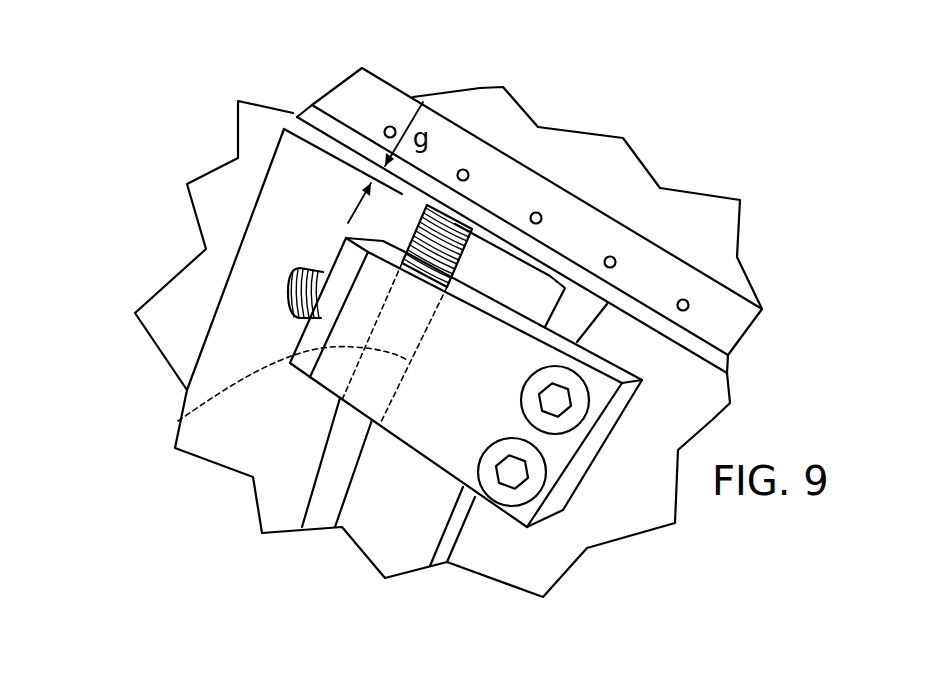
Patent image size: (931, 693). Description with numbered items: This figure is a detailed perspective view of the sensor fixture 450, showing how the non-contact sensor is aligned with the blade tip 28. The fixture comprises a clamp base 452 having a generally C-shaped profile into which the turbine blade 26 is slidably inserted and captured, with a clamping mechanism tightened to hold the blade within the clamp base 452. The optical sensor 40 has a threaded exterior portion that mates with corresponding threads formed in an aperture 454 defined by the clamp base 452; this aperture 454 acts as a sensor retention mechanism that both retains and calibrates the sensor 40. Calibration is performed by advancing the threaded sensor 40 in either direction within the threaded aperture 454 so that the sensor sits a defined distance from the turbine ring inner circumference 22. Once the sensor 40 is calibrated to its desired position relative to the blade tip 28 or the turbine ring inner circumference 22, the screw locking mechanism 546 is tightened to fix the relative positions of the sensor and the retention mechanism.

The turbine ring inner circumference 22 is at (493, 210).
The turbine blade 26 is at (263, 423).
The blade tip 28 is at (327, 132).
The optical sensor 40 is at (466, 268).
The sensor fixture 450 is at (330, 413).
The clamp base 452 is at (440, 436).
The aperture 454 is at (178, 421).
The screw locking mechanism 546 is at (290, 284).